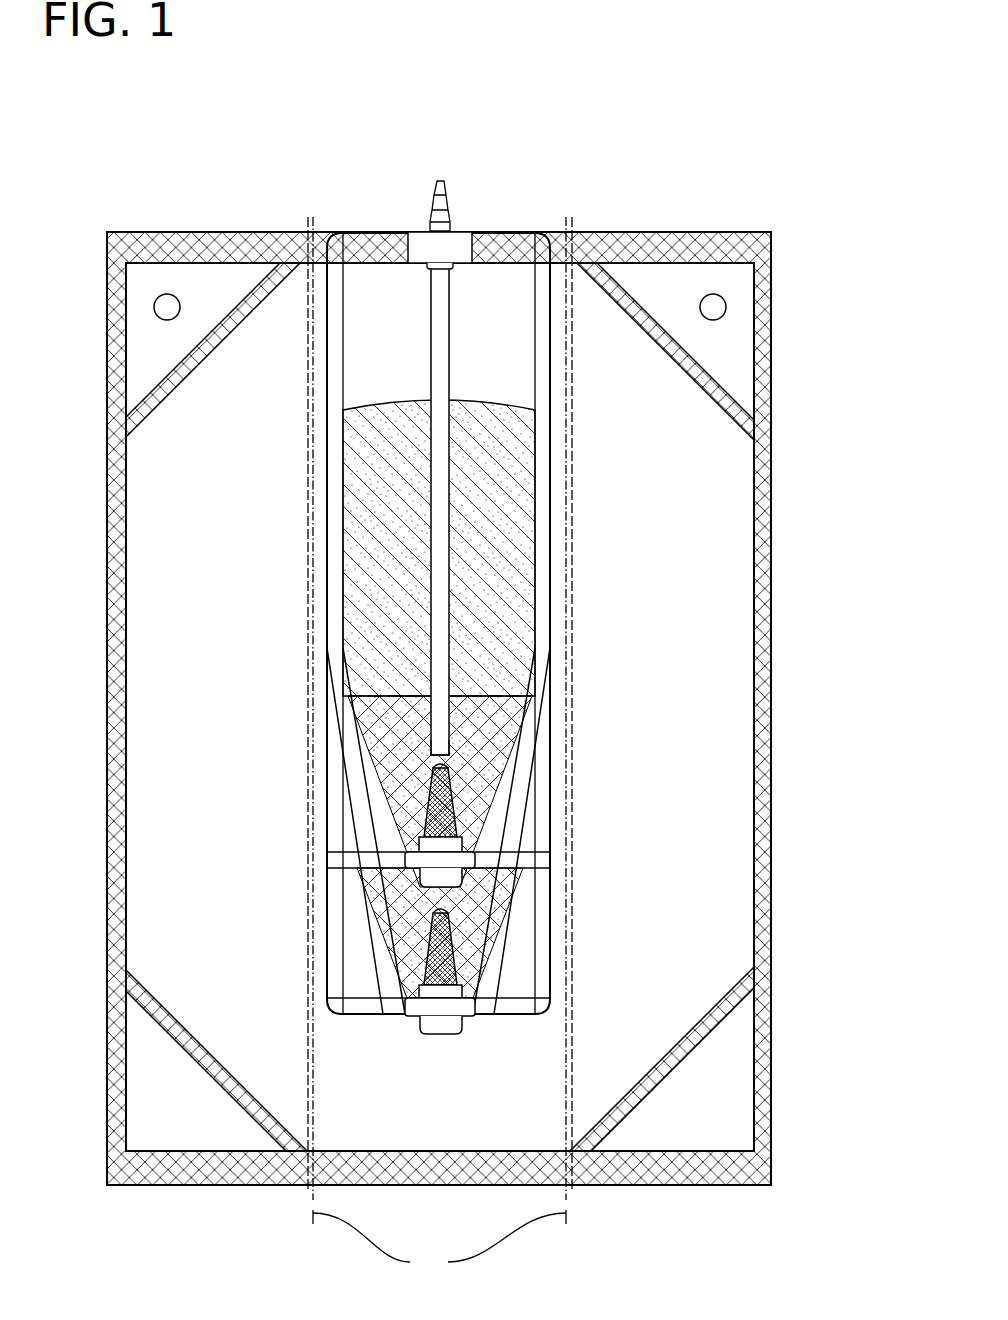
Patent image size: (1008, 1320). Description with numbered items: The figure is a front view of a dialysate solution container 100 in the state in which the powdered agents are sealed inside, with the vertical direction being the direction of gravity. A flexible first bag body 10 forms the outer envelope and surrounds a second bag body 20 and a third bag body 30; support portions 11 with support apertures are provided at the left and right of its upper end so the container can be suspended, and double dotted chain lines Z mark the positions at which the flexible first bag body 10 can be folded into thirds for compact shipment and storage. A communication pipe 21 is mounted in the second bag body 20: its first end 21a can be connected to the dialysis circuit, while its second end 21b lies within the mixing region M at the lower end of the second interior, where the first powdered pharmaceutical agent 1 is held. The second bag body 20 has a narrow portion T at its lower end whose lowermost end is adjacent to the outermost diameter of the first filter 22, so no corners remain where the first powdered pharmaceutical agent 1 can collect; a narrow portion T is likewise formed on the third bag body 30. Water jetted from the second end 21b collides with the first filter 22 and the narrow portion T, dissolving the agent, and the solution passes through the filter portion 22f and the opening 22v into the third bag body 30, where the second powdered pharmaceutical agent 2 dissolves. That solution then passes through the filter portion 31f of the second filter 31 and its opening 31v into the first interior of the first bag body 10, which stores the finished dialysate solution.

The dialysate solution container 100 is at (170, 188).
The first bag body 10 is at (772, 500).
The support portions 11 is at (158, 308).
The second bag body 20 is at (553, 320).
The communication pipe 21 is at (280, 449).
The first end 21a is at (441, 182).
The second end 21b is at (433, 765).
The first powdered pharmaceutical agent 1 is at (505, 432).
The mixing region M is at (518, 752).
The second powdered pharmaceutical agent 2 is at (495, 882).
The first filter 22 is at (438, 860).
The filter portion 22f is at (655, 844).
The opening 22v is at (447, 888).
The third bag body 30 is at (553, 988).
The second filter 31 is at (655, 1030).
The filter portion 31f is at (437, 964).
The opening 31v is at (441, 1036).
The narrow portion T is at (500, 798).
The double dotted chain lines Z is at (440, 748).